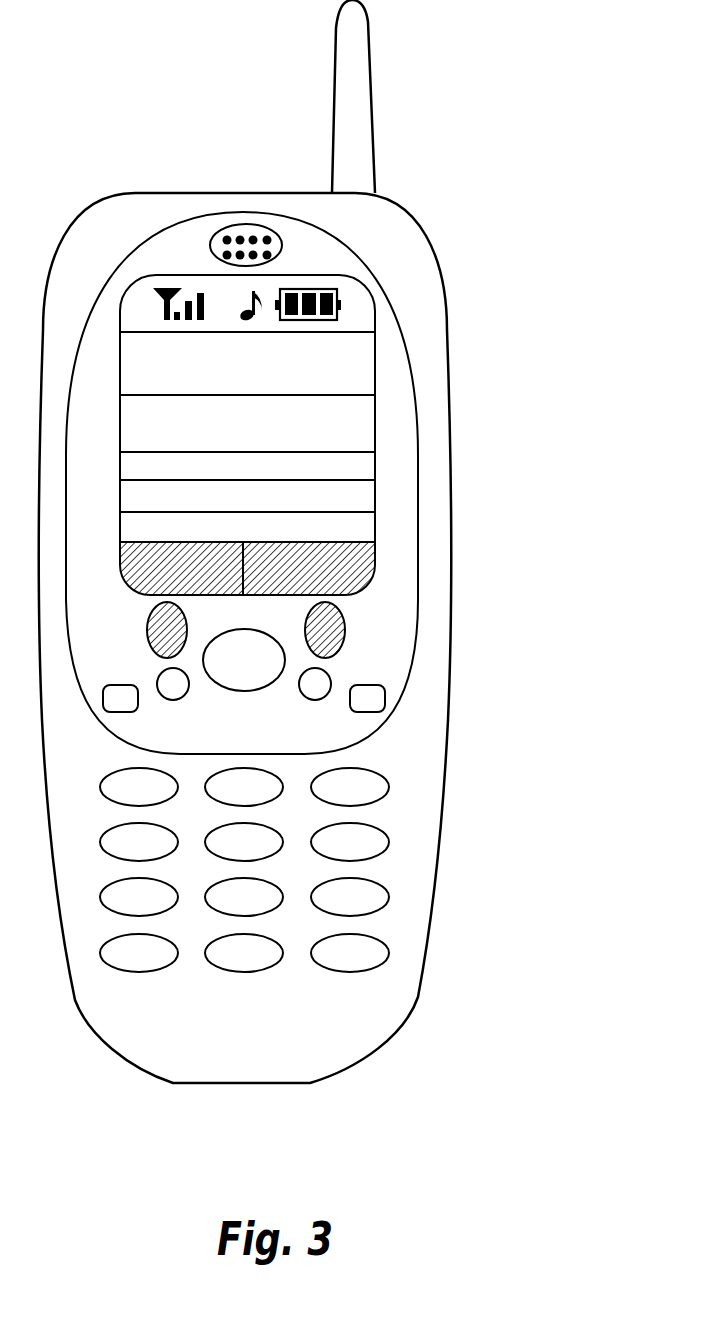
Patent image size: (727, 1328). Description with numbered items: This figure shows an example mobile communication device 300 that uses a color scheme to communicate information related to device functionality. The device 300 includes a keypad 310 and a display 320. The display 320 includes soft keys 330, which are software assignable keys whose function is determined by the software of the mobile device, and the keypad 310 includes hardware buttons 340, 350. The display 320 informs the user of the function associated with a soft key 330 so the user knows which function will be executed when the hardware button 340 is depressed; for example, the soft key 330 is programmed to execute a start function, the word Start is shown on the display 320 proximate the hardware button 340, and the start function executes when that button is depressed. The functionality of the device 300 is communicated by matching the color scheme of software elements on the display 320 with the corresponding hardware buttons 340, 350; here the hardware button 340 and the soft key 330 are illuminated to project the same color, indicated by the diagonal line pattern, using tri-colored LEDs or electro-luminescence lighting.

The mobile communication device 300 is at (499, 178).
The keypad 310 is at (313, 783).
The display 320 is at (120, 313).
The soft keys 330 is at (120, 558).
The hardware button 340 is at (160, 628).
The hardware button 350 is at (112, 784).